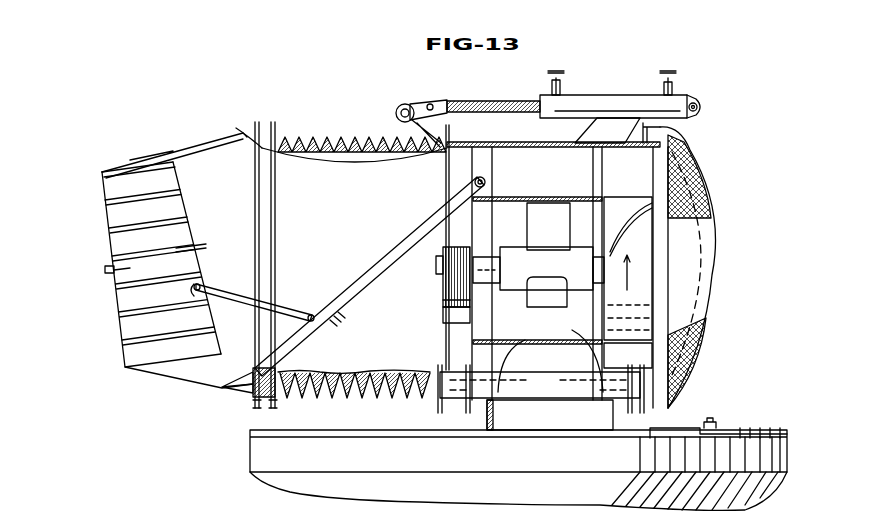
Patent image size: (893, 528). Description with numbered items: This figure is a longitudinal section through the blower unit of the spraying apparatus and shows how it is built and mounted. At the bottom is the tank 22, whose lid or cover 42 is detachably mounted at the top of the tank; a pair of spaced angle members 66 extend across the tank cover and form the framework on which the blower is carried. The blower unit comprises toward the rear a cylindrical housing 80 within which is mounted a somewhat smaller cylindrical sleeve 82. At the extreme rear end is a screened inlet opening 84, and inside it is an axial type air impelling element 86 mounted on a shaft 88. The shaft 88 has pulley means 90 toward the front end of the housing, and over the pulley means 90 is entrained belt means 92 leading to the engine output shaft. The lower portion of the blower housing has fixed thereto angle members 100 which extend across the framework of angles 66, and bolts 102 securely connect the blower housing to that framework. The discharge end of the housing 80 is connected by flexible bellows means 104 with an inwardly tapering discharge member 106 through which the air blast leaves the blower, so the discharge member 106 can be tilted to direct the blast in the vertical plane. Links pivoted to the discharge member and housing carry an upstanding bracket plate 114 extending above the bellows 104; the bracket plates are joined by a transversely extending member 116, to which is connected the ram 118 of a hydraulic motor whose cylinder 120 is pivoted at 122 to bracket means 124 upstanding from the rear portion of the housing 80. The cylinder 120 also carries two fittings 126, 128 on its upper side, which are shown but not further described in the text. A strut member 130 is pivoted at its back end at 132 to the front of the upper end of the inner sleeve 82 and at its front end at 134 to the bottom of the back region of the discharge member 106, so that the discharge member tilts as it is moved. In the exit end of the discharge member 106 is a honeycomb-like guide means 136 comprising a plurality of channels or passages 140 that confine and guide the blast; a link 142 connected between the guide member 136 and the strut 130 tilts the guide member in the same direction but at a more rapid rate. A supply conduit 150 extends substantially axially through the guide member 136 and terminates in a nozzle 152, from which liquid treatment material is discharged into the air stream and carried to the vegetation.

The tank 22 is at (787, 460).
The lid or cover 42 is at (787, 430).
The angle members 66 is at (580, 418).
The cylindrical housing 80 is at (572, 142).
The cylindrical sleeve 82 is at (540, 195).
The screened inlet opening 84 is at (700, 190).
The air impelling element 86 is at (622, 197).
The shaft 88 is at (443, 262).
The pulley means 90 is at (446, 284).
The belt means 92 is at (444, 310).
The angle members 100 is at (551, 390).
The bolts 102 is at (550, 356).
The flexible bellows means 104 is at (347, 145).
The discharge member 106 is at (236, 128).
The bracket plate 114 is at (398, 127).
The transversely extending member 116 is at (408, 104).
The ram 118 is at (487, 100).
The cylinder 120 is at (620, 98).
The pivot 122 is at (702, 107).
The bracket means 124 is at (665, 126).
The valve 126 is at (558, 74).
The valve 128 is at (672, 86).
The strut member 130 is at (355, 278).
The pivot 132 is at (474, 182).
The pivot 134 is at (252, 348).
The honeycomb-like guide means 136 is at (137, 313).
The channels or passages 140 is at (131, 256).
The link 142 is at (280, 300).
The supply conduit 150 is at (202, 246).
The nozzle 152 is at (104, 270).